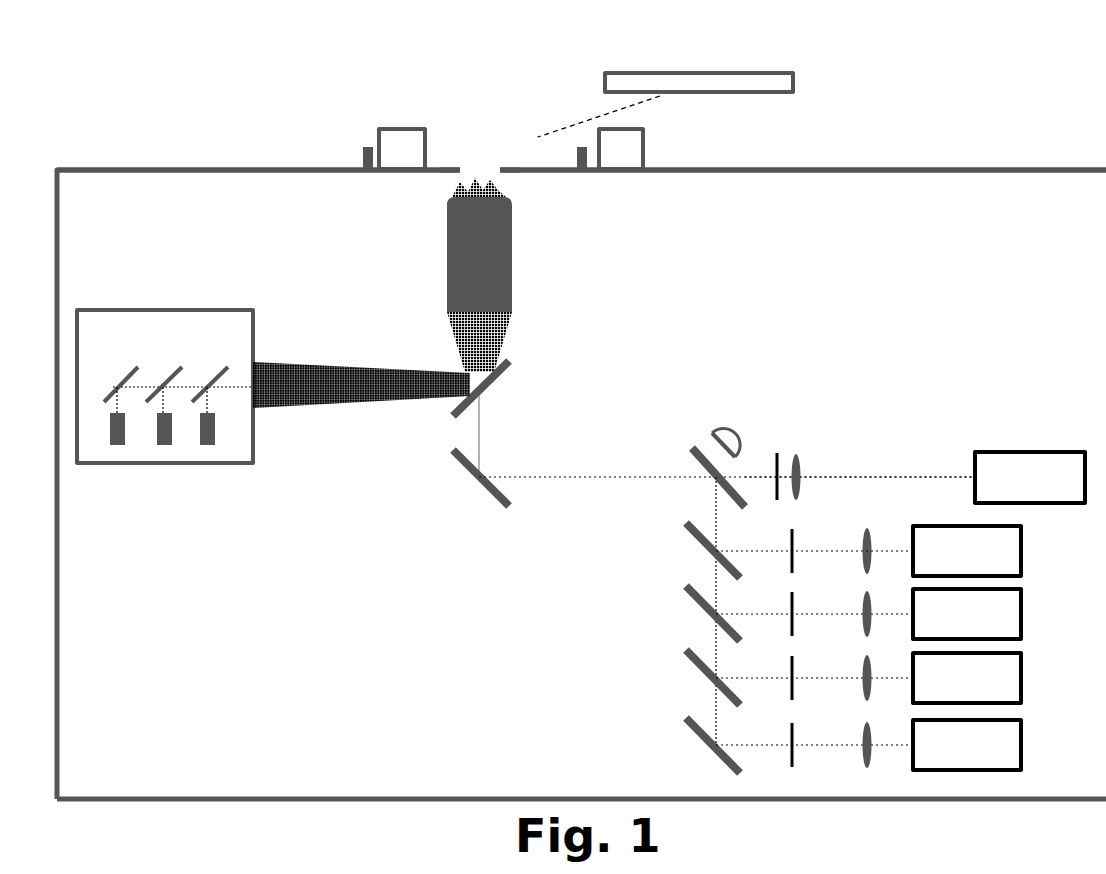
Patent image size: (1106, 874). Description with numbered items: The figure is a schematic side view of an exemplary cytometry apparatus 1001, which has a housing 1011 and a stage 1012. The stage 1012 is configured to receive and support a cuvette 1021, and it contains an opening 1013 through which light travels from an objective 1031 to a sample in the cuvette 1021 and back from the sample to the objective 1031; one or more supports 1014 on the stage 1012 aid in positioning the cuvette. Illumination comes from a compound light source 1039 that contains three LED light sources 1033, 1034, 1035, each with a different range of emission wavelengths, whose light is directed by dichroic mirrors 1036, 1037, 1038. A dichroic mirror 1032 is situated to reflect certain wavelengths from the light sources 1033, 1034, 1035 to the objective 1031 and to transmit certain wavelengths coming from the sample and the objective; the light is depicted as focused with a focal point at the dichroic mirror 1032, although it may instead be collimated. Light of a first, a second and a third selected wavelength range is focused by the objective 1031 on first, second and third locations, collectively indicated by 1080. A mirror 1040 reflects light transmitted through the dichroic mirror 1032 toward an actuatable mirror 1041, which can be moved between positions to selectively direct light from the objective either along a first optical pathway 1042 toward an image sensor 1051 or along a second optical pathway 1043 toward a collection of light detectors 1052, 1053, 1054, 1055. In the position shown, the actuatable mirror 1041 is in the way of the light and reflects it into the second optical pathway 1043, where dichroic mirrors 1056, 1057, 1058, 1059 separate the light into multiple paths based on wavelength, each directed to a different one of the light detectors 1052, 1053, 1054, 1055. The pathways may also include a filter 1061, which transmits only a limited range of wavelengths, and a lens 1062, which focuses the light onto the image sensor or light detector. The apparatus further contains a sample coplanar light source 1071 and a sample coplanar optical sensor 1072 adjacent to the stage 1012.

The cytometry apparatus 1001 is at (938, 163).
The housing 1011 is at (187, 170).
The stage 1012 is at (447, 167).
The opening 1013 is at (480, 167).
The support 1014 is at (365, 166).
The cuvette 1021 is at (685, 90).
The objective 1031 is at (483, 287).
The dichroic mirror 1032 is at (500, 375).
The light source 1033 is at (116, 448).
The light source 1034 is at (162, 448).
The light source 1035 is at (206, 448).
The dichroic mirror 1036 is at (121, 371).
The dichroic mirror 1037 is at (172, 371).
The dichroic mirror 1038 is at (220, 371).
The compound light source 1039 is at (200, 285).
The mirror 1040 is at (462, 463).
The actuatable mirror 1041 is at (712, 452).
The first optical pathway 1042 is at (838, 478).
The second optical pathway 1043 is at (714, 505).
The image sensor 1051 is at (1030, 477).
The light detector 1052 is at (967, 551).
The light detector 1053 is at (967, 614).
The light detector 1054 is at (967, 678).
The light detector 1055 is at (967, 745).
The dichroic mirror 1056 is at (769, 550).
The dichroic mirror 1057 is at (769, 613).
The dichroic mirror 1058 is at (769, 677).
The dichroic mirror 1059 is at (769, 745).
The filter 1061 is at (798, 531).
The lens 1062 is at (876, 531).
The sample coplanar light source 1071 is at (402, 125).
The sample coplanar optical sensor 1072 is at (649, 142).
The focal locations 1080 is at (455, 187).